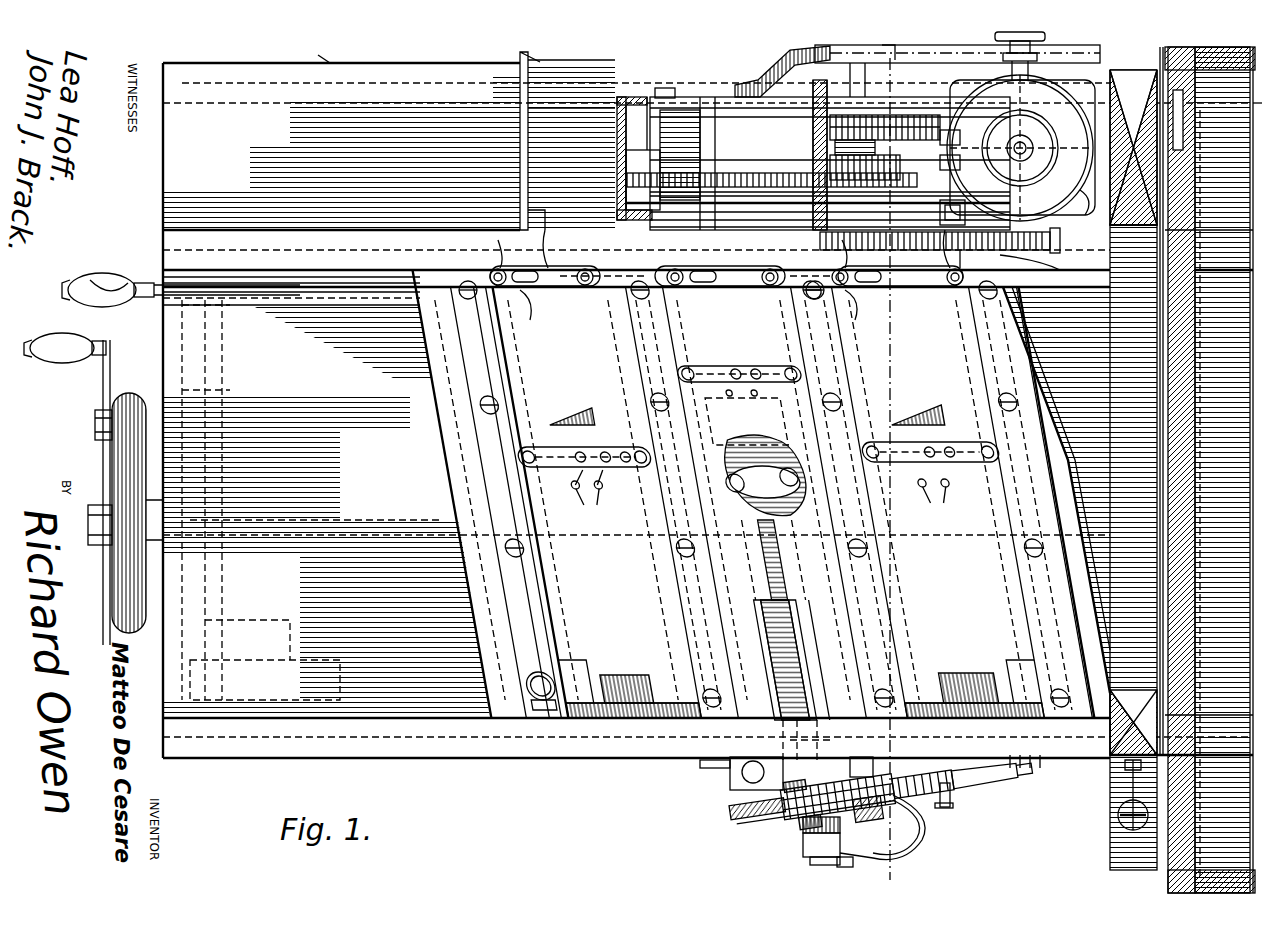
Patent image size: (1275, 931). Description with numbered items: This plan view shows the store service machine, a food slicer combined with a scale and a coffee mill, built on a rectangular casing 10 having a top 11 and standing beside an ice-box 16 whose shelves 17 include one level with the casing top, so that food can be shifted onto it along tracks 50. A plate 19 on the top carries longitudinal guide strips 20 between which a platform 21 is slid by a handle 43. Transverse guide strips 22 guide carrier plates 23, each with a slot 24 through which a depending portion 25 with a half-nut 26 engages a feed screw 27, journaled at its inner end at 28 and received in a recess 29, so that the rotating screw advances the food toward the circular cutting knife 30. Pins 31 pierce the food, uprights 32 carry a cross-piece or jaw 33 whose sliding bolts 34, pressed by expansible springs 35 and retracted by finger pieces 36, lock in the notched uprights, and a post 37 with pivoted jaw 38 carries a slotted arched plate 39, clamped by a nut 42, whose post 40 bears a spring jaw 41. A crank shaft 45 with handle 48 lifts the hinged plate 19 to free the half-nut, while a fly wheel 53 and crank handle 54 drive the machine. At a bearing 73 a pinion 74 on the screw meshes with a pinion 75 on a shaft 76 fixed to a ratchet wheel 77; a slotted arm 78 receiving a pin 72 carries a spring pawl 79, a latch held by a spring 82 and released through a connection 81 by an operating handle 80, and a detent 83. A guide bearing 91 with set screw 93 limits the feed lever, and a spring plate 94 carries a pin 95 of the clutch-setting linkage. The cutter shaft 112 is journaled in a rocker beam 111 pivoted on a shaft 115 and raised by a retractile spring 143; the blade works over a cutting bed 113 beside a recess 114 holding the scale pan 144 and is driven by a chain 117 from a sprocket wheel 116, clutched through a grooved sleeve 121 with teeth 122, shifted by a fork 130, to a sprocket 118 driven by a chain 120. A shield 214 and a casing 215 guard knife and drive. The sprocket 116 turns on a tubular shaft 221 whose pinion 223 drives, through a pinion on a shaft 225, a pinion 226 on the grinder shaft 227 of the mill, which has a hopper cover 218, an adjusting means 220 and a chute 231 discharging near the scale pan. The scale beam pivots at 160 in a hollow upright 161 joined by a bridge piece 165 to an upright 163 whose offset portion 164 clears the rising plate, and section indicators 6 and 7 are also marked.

The section line 6 is at (699, 100).
The section line 7 is at (896, 466).
The casing 10 is at (334, 52).
The top 11 is at (706, 410).
The ice-box 16 is at (1140, 885).
The shelves 17 is at (1210, 470).
The plate 19 is at (636, 509).
The guide strips 20 is at (425, 765).
The platform 21 is at (467, 494).
The guide strips 22 is at (772, 502).
The carrier plates 23 is at (767, 500).
The slot 24 is at (774, 503).
The depending portions 25 is at (800, 674).
The half-nuts 26 is at (795, 560).
The feed screw 27 is at (812, 660).
The journal 28 is at (690, 440).
The recess 29 is at (505, 730).
The cutting knife 30 is at (520, 268).
The pins 31 is at (763, 504).
The uprights 32 is at (900, 465).
The cross-piece or jaw 33 is at (583, 448).
The sliding bolts 34 is at (571, 487).
The expansible springs 35 is at (568, 404).
The finger pieces 36 is at (741, 386).
The post 37 is at (920, 392).
The jaw 38 is at (500, 240).
The slotted and arched plate 39 is at (560, 288).
The post 40 is at (590, 286).
The spring jaw 41 is at (590, 260).
The nut 42 is at (470, 300).
The handle 43 is at (544, 738).
The crank shaft 45 is at (240, 570).
The handle 48 is at (100, 272).
The tracks or guideways 50 is at (1228, 270).
The fly wheel 53 is at (130, 400).
The crank handle 54 is at (75, 365).
The pin 72 is at (955, 805).
The bearing 73 is at (785, 765).
The pinion 74 is at (796, 803).
The pinion 75 is at (805, 845).
The shaft 76 is at (820, 874).
The ratchet pinion or wheel 77 is at (797, 816).
The slotted arm 78 is at (1008, 645).
The spring pawl 79 is at (858, 808).
The operating handle 80 is at (849, 876).
The connection 81 is at (884, 830).
The spring 82 is at (1020, 770).
The detent 83 is at (988, 750).
The guide bearing 91 is at (730, 780).
The set screw 93 is at (735, 775).
The spring plate 94 is at (860, 757).
The pin 95 is at (919, 760).
The rocker beam 111 is at (810, 110).
The shaft 112 is at (672, 95).
The cutting bed 113 is at (625, 160).
The cut-out or recess 114 is at (528, 110).
The shaft 115 is at (850, 97).
The sprocket wheel 116 is at (830, 160).
The endless chain 117 is at (772, 171).
The sprocket wheel 118 is at (905, 118).
The endless chain 120 is at (875, 155).
The clutch sleeve 121 is at (976, 165).
The clutch teeth 122 is at (945, 145).
The fork 130 is at (845, 153).
The retractile spring 143 is at (1077, 204).
The scale pan 144 is at (530, 62).
The pivot 160 is at (528, 148).
The hollow upright 161 is at (1133, 90).
The upright 163 is at (1110, 770).
The offset portion 164 is at (1110, 848).
The bridge piece 165 is at (1139, 401).
The shield 214 is at (535, 215).
The casing 215 is at (633, 100).
The removable cover 218 is at (1021, 148).
The controlling means 220 is at (1045, 40).
The tubular shaft 221 is at (935, 213).
The pinion 223 is at (820, 243).
The shaft 225 is at (998, 270).
The pinion 226 is at (1055, 240).
The shaft 227 is at (1045, 270).
The chute or spout 231 is at (760, 60).